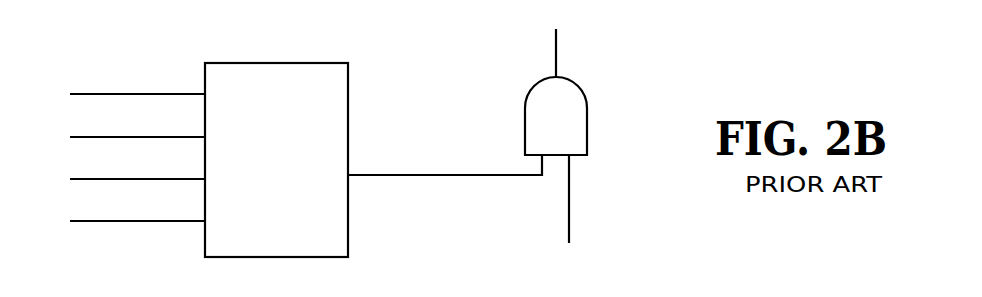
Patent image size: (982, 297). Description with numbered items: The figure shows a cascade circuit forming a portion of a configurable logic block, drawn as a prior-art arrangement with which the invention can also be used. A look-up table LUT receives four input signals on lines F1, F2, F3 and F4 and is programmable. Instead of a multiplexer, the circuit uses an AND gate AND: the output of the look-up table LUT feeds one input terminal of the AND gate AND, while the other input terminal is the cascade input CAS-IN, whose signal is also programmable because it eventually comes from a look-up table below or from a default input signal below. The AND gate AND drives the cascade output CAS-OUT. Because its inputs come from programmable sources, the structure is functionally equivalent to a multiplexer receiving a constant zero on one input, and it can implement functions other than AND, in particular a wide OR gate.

The look-up table LUT is at (276, 160).
The LUT input F1 is at (119, 222).
The LUT input F2 is at (119, 180).
The LUT input F3 is at (119, 138).
The LUT input F4 is at (119, 95).
The AND gate AND is at (467, 126).
The cascade input terminal CAS-IN is at (563, 211).
The cascade output terminal CAS-OUT is at (562, 38).